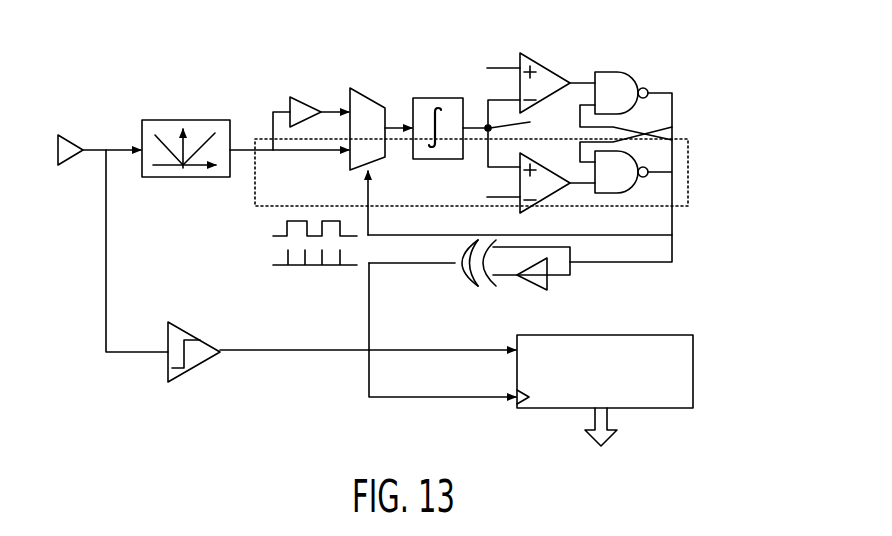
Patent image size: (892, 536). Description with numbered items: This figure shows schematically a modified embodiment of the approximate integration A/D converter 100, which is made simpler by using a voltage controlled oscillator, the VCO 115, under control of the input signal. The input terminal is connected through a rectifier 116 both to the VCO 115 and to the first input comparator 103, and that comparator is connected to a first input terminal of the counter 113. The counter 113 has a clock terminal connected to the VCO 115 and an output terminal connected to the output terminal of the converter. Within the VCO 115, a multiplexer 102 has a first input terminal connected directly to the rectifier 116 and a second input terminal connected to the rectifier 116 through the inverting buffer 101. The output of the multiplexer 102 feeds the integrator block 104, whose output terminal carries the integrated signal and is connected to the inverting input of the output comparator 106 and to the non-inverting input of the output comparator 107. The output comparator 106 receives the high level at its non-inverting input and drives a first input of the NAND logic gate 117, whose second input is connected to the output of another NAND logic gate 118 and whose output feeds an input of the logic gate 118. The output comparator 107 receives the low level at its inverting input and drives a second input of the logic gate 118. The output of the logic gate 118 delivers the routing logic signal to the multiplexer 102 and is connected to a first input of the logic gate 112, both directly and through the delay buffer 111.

The approximate integration A/D converter 100 is at (102, 397).
The inverting buffer 101 is at (302, 95).
The multiplexer 102 is at (366, 108).
The first input comparator 103 is at (192, 358).
The integrator block 104 is at (421, 108).
The output comparator 106 is at (545, 75).
The output comparator 107 is at (545, 190).
The delay buffer 111 is at (550, 283).
The logic gate 112 is at (463, 277).
The counter 113 is at (685, 400).
The VCO 115 is at (315, 262).
The rectifier 116 is at (157, 174).
The NAND logic gate 117 is at (618, 75).
The NAND logic gate 118 is at (618, 182).